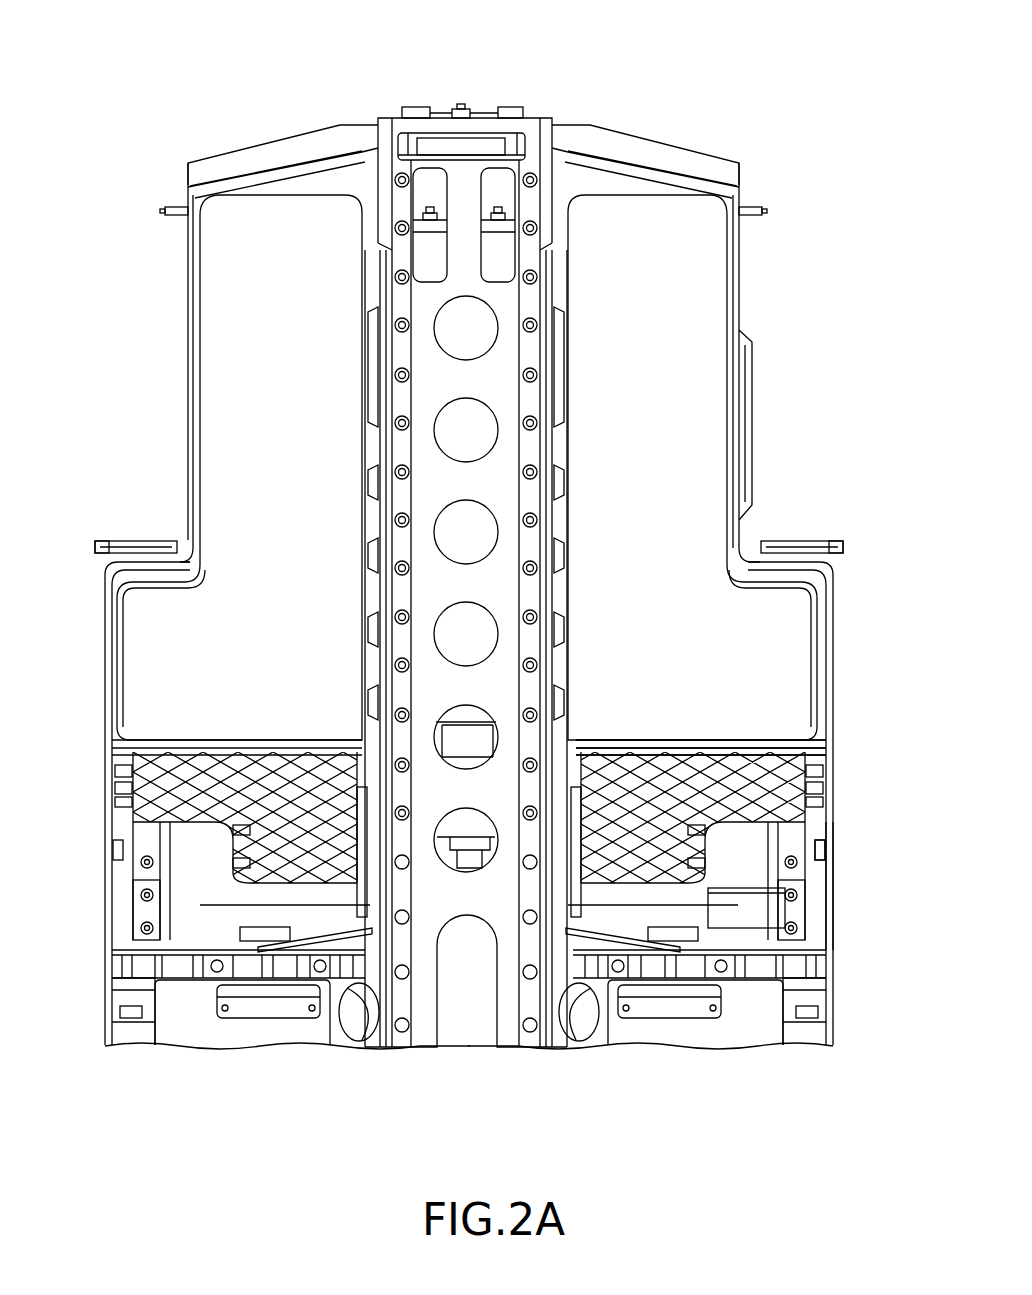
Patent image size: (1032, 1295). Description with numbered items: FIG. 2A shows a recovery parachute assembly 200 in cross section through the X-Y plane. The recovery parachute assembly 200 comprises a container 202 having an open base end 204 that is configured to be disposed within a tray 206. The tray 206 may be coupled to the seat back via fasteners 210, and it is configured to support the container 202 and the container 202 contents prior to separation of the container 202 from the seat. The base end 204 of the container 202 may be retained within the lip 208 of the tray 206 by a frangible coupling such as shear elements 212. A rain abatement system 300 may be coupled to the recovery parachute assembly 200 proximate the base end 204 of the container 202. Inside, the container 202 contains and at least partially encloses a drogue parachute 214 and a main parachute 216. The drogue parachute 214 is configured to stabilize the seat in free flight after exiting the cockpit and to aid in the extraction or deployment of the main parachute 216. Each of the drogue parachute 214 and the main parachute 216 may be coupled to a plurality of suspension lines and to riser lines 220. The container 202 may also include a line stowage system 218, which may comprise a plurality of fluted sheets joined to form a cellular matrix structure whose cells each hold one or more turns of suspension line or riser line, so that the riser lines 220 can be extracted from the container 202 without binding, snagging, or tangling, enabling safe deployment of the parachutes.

The recovery parachute assembly 200 is at (722, 84).
The container 202 is at (738, 292).
The base end 204 is at (815, 873).
The tray 206 is at (98, 960).
The lip 208 is at (830, 927).
The fasteners 210 is at (152, 1030).
The shear elements 212 is at (516, 144).
The drogue parachute 214 is at (664, 348).
The main parachute 216 is at (312, 348).
The line stowage system 218 is at (663, 752).
The riser lines 220 is at (763, 925).
The rain abatement system 300 is at (848, 793).